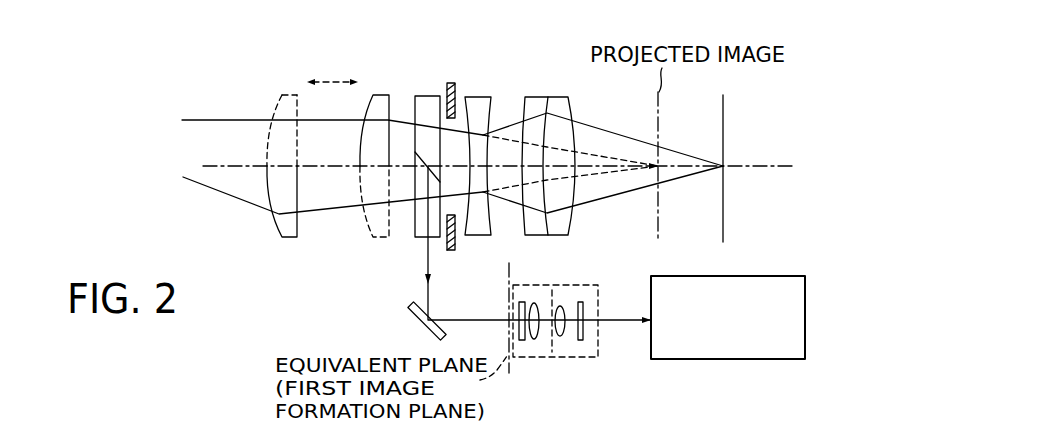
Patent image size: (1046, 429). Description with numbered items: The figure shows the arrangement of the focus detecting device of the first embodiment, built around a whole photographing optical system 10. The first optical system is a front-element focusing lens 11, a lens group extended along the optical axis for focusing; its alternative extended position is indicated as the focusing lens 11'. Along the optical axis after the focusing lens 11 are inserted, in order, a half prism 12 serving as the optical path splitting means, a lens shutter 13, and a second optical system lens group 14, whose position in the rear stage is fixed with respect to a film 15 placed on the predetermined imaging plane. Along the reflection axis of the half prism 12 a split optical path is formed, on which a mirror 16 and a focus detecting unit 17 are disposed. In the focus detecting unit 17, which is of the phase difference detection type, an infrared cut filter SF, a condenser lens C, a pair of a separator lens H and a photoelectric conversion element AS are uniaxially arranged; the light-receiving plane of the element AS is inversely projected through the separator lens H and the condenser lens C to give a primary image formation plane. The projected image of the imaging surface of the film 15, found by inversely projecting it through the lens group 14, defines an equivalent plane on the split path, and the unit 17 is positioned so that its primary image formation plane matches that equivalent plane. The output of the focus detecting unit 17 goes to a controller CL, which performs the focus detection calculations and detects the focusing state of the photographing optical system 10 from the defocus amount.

The photographing optical system 10 is at (553, 46).
The first lens (moved position) 11' is at (285, 144).
The focusing lens 11 is at (376, 144).
The half prism 12 is at (422, 95).
The lens shutter 13 is at (451, 83).
The second optical system lens group 14 is at (570, 83).
The film 15 is at (723, 95).
The mirror 16 is at (412, 306).
The focus detecting unit 17 is at (707, 343).
The infrared cut filter SF is at (522, 340).
The condenser lens C is at (536, 302).
The separator lens H is at (560, 305).
The photoelectric conversion element AS is at (581, 340).
The controller CL is at (728, 317).